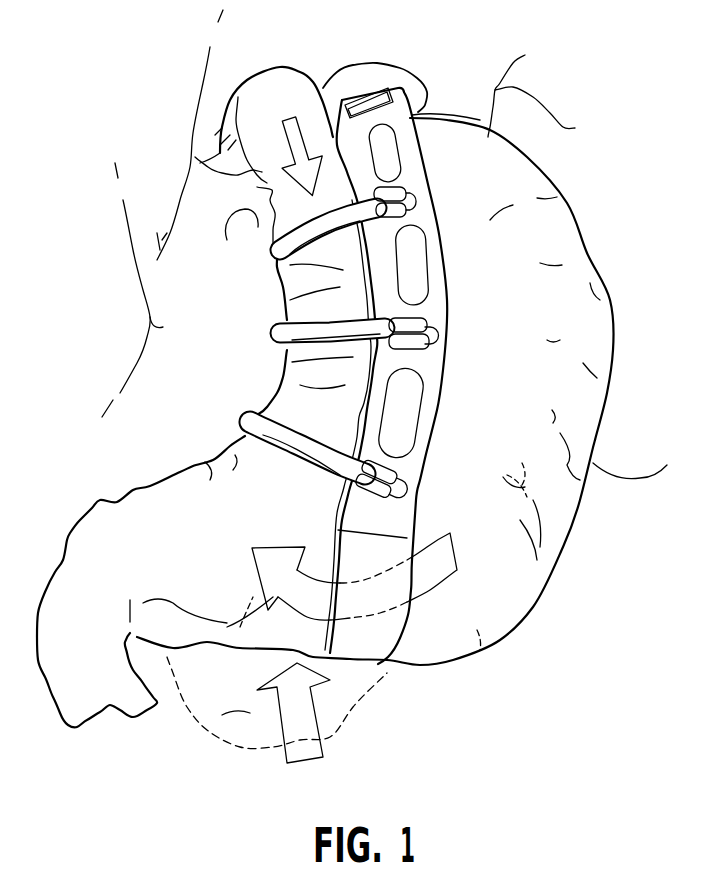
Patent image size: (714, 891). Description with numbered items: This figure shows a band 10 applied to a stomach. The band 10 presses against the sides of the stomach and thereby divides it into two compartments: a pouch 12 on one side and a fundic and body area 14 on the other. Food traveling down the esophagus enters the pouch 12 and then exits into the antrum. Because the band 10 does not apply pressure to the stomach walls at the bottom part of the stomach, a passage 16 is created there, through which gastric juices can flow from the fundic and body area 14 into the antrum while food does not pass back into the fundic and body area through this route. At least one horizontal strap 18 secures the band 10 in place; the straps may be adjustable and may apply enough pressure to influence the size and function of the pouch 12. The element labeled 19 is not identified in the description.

The band 10 is at (346, 422).
The pouch 12 is at (280, 383).
The fundic and body area 14 is at (550, 237).
The passage 16 is at (433, 608).
The horizontal strap 18 is at (267, 257).
The band 19 is at (423, 170).